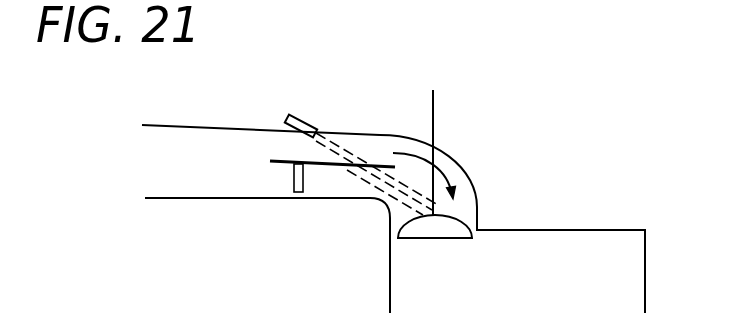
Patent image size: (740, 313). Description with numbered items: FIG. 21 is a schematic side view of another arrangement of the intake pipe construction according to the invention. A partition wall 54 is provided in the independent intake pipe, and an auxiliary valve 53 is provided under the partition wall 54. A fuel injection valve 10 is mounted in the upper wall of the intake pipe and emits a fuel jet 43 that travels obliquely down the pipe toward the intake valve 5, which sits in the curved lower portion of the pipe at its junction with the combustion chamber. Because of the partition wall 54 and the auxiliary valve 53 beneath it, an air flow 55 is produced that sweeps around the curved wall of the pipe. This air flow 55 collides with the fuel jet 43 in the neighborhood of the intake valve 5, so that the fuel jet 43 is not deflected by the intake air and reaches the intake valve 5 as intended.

The fuel injection valve 10 is at (288, 116).
The fuel jet 43 is at (434, 204).
The intake valve 5 is at (452, 240).
The auxiliary valve 53 is at (293, 181).
The guide plate 54 is at (327, 169).
The air flow 55 is at (433, 177).